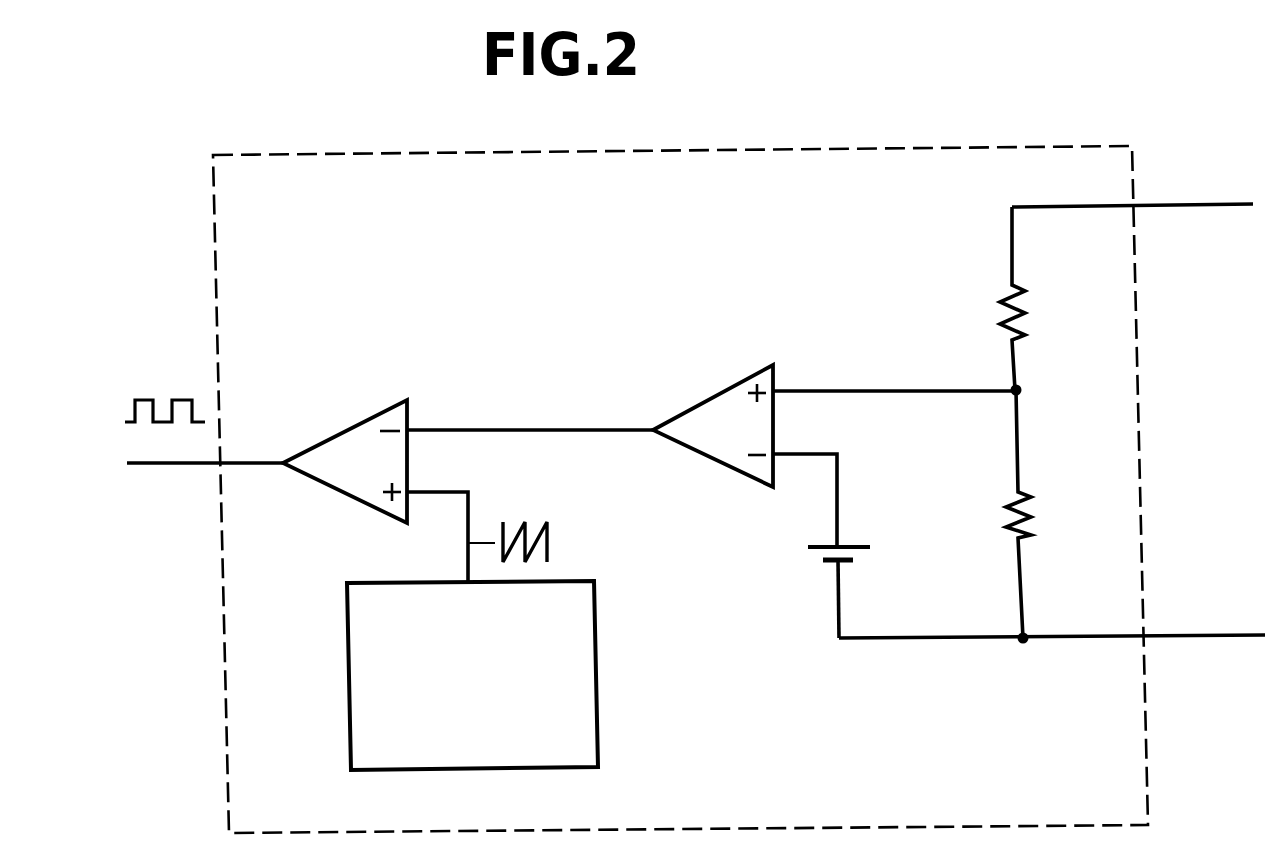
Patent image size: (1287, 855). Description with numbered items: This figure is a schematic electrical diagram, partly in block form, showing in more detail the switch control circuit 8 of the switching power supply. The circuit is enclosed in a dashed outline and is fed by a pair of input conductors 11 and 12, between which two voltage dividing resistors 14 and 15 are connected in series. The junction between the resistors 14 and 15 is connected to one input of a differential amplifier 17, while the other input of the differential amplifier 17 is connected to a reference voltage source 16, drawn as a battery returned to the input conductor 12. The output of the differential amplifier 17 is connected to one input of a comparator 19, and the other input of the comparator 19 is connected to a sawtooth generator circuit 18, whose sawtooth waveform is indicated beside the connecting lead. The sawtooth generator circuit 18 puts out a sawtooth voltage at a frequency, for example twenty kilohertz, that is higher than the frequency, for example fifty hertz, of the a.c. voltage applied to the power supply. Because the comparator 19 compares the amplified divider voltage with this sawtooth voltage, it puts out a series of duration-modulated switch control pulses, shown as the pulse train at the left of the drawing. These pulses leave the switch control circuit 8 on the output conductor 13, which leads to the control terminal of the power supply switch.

The switch control circuit 8 is at (1138, 182).
The input conductor 11 is at (1180, 208).
The input conductor 12 is at (1190, 634).
The output conductor 13 is at (168, 428).
The voltage dividing resistor 14 is at (1030, 325).
The voltage dividing resistor 15 is at (1030, 513).
The reference voltage source 16 is at (853, 545).
The differential amplifier 17 is at (712, 395).
The sawtooth generator circuit 18 is at (597, 687).
The comparator 19 is at (407, 413).